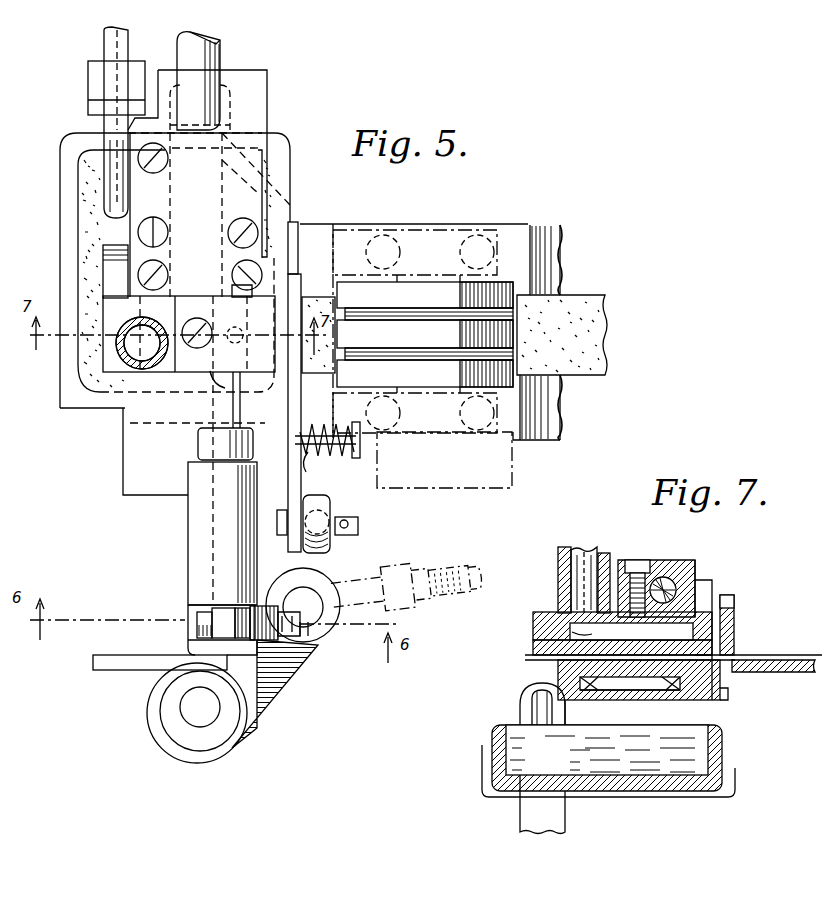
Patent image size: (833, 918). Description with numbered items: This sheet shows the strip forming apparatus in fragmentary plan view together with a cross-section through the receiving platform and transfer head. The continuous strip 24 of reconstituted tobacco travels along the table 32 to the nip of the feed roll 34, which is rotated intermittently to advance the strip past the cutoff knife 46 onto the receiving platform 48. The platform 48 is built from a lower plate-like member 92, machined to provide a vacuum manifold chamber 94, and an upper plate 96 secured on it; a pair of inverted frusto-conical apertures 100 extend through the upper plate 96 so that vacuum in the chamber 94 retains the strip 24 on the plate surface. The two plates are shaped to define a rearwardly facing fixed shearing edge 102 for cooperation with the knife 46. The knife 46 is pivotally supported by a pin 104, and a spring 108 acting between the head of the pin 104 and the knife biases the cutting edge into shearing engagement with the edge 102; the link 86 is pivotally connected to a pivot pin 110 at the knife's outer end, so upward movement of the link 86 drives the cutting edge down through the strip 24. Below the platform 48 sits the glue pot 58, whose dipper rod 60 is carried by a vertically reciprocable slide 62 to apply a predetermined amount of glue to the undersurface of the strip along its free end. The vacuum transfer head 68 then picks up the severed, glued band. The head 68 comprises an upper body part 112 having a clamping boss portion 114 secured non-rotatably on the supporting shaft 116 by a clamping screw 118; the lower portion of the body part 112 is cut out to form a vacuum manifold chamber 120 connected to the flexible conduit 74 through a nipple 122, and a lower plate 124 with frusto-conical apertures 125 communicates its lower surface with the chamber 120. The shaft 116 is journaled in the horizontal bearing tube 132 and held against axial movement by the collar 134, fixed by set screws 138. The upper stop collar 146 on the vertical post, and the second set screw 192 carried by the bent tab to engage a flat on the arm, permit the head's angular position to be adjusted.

In FIG. 5, the continuous strip 24 is at (578, 298).
In FIG. 7, the continuous strip 24 is at (778, 657).
In FIG. 5, the table 32 is at (556, 252).
In FIG. 5, the feed roll 34 is at (440, 344).
In FIG. 5, the cutoff knife 46 is at (305, 272).
In FIG. 7, the cutoff knife 46 is at (734, 612).
In FIG. 7, the receiving platform 48 is at (730, 695).
In FIG. 5, the glue pot 58 is at (272, 133).
In FIG. 7, the glue pot 58 is at (722, 755).
In FIG. 5, the dipper rod 60 is at (118, 228).
In FIG. 7, the dipper rod 60 is at (520, 800).
In FIG. 5, the vertically reciprocable slide 62 is at (88, 108).
In FIG. 7, the vertically reciprocable slide 62 is at (568, 816).
In FIG. 5, the vacuum transfer head 68 is at (136, 367).
In FIG. 7, the vacuum transfer head 68 is at (712, 583).
In FIG. 7, the flexible conduit 74 is at (560, 550).
In FIG. 5, the link 86 is at (325, 550).
In FIG. 7, the lower plate-like member 92 is at (712, 702).
In FIG. 7, the vacuum manifold chamber 94 is at (640, 692).
In FIG. 7, the upper plate 96 is at (560, 675).
In FIG. 7, the inverted frusto-conical apertures 100 is at (592, 692).
In FIG. 5, the fixed shearing edge 102 is at (298, 238).
In FIG. 7, the fixed shearing edge 102 is at (722, 672).
In FIG. 5, the pin 104 is at (312, 465).
In FIG. 5, the spring 108 is at (338, 422).
In FIG. 5, the pivot pin 110 is at (358, 526).
In FIG. 7, the upper body part 112 is at (545, 626).
In FIG. 7, the clamping boss portion 114 is at (690, 576).
In FIG. 5, the supporting shaft 116 is at (218, 381).
In FIG. 7, the supporting shaft 116 is at (664, 577).
In FIG. 7, the clamping screw 118 is at (637, 560).
In FIG. 7, the vacuum manifold chamber 120 is at (571, 607).
In FIG. 7, the nipple 122 is at (586, 552).
In FIG. 7, the lower plate 124 is at (533, 647).
In FIG. 7, the frusto-conical apertures 125 is at (665, 633).
In FIG. 5, the horizontal bearing tube 132 is at (190, 545).
In FIG. 5, the collar 134 is at (222, 449).
In FIG. 5, the set screws 138 is at (200, 456).
In FIG. 5, the upper stop collar 146 is at (196, 737).
In FIG. 5, the second set screw 192 is at (318, 636).